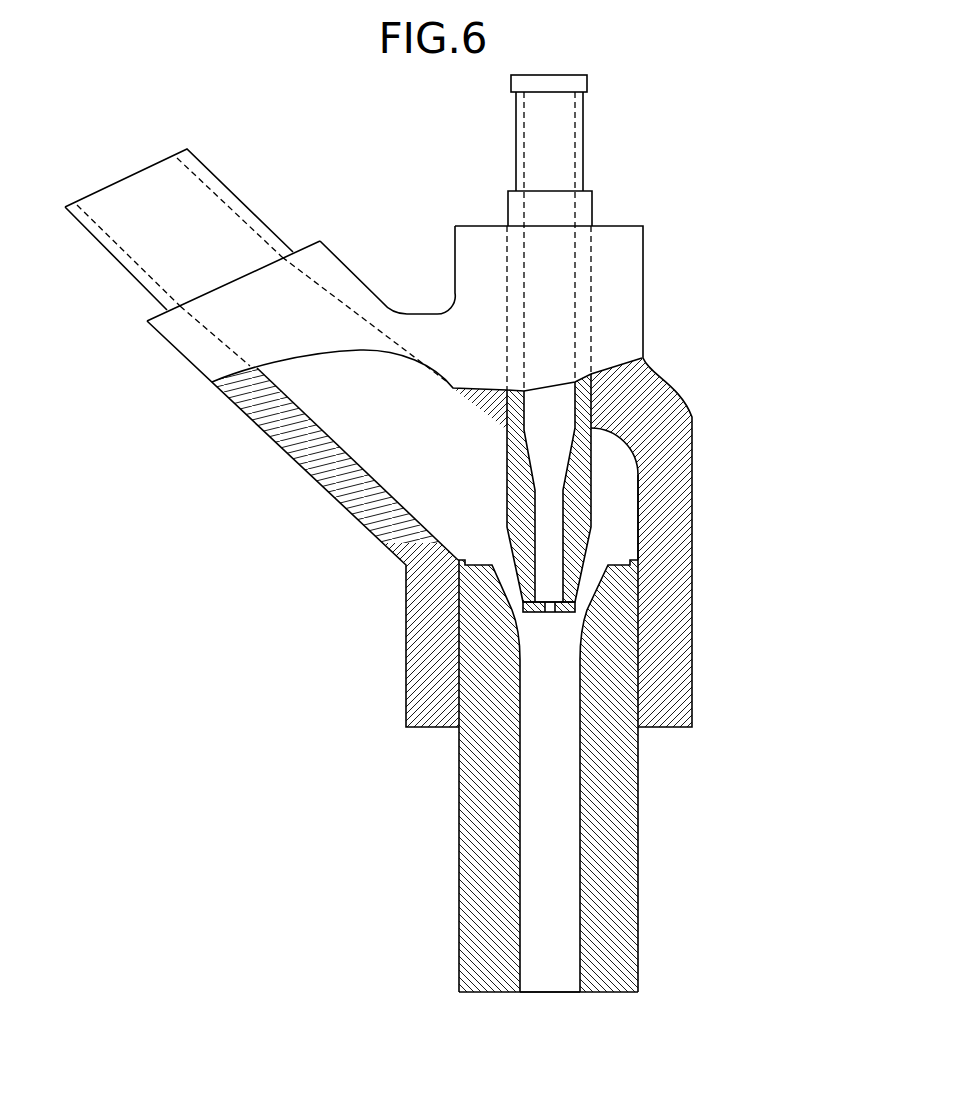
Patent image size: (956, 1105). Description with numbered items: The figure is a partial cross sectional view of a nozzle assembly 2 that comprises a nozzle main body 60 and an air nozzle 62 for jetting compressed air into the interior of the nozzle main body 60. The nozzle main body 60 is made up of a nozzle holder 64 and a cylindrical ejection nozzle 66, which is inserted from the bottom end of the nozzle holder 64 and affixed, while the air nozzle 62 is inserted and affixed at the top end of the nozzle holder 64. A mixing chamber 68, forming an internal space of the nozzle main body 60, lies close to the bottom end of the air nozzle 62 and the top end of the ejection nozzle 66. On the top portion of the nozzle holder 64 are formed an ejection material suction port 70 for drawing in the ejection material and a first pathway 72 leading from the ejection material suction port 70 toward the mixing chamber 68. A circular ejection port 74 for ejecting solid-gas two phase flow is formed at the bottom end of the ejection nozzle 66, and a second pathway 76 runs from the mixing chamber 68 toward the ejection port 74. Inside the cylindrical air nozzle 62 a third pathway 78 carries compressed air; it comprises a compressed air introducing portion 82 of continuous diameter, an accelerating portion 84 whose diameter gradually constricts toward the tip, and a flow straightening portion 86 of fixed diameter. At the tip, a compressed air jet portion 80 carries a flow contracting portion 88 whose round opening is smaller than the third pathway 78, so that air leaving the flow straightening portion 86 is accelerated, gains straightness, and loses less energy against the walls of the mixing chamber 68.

The nozzle assembly 2 is at (395, 163).
The nozzle main body 60 is at (700, 479).
The air nozzle 62 is at (585, 147).
The nozzle holder 64 is at (665, 683).
The ejection nozzle 66 is at (640, 878).
The mixing chamber 68 is at (535, 632).
The ejection material suction port 70 is at (135, 175).
The first pathway 72 is at (383, 428).
The ejection port 74 is at (548, 994).
The second pathway 76 is at (547, 765).
The third pathway 78 is at (553, 422).
The compressed air jet portion 80 is at (550, 613).
The compressed air introducing portion 82 is at (549, 410).
The accelerating portion 84 is at (549, 452).
The flow straightening portion 86 is at (547, 528).
The flow contracting portion 88 is at (577, 607).